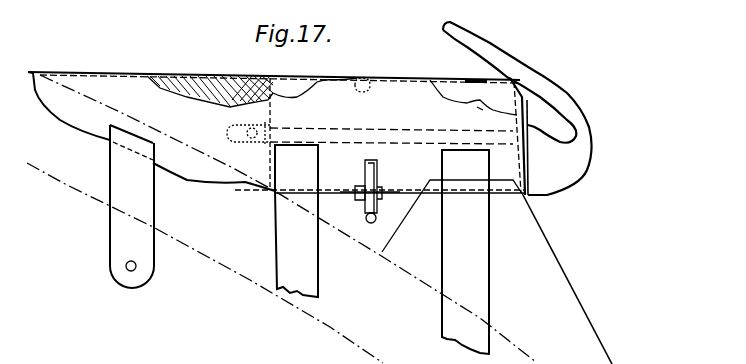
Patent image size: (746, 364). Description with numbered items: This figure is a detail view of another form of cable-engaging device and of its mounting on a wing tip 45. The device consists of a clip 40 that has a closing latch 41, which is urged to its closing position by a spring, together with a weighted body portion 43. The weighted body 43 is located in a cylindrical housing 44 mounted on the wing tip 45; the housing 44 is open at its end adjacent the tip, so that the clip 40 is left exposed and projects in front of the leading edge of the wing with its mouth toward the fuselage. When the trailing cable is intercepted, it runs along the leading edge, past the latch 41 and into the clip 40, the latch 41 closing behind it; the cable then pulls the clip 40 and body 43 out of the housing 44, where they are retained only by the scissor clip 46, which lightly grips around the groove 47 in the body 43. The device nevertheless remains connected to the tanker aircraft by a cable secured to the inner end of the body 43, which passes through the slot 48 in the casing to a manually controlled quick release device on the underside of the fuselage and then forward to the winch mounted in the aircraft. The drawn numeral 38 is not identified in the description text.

The hinge pin 38 is at (253, 141).
The clip 40 is at (540, 83).
The closing latch 41 is at (522, 82).
The weighted body portion 43 is at (463, 86).
The cylindrical housing 44 is at (413, 80).
The wing tip 45 is at (400, 326).
The scissor clip 46 is at (376, 208).
The groove 47 is at (362, 78).
The slot 48 is at (378, 137).